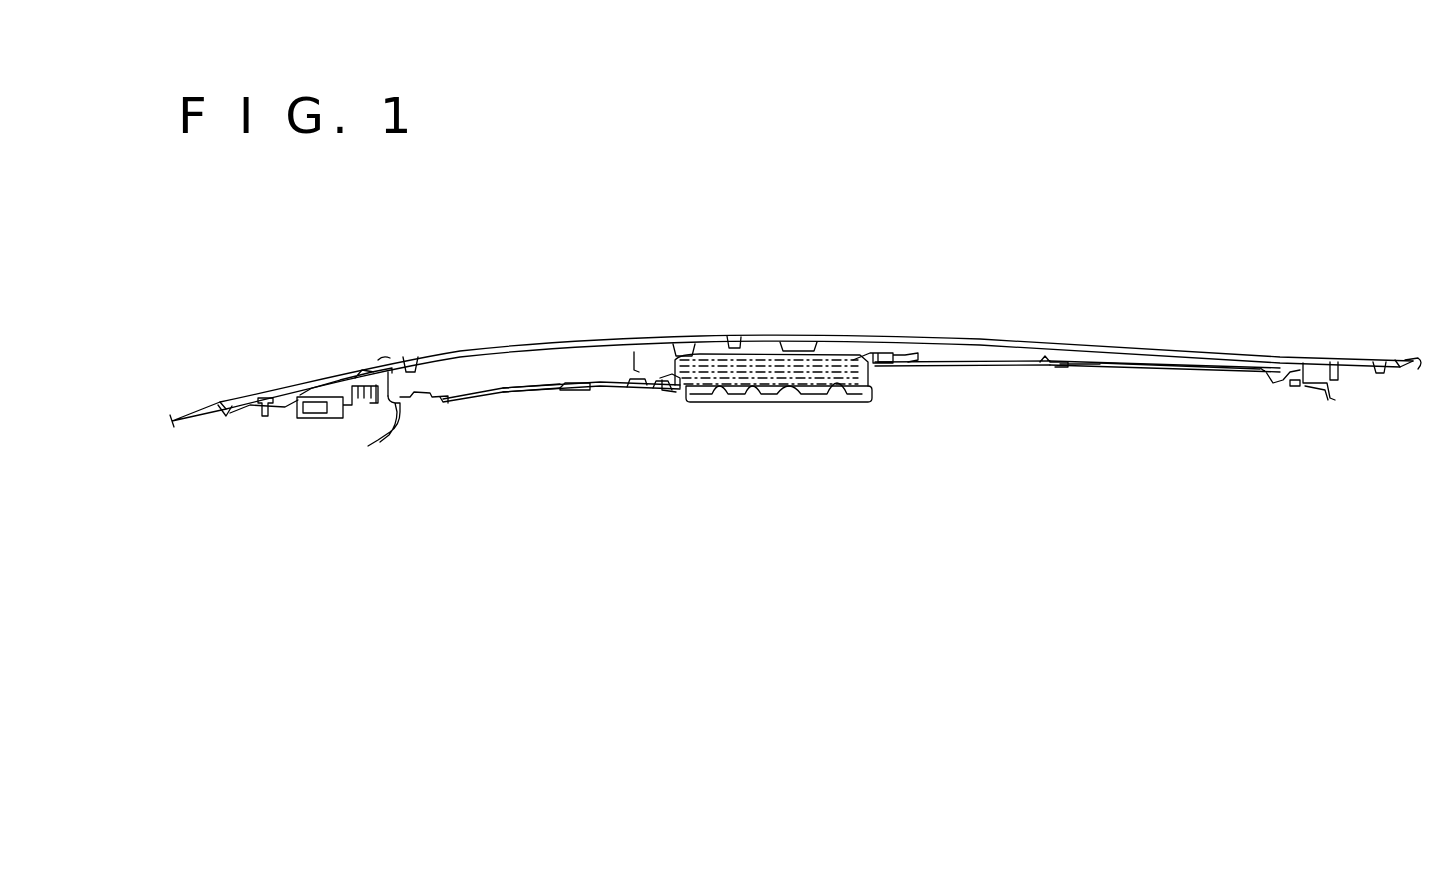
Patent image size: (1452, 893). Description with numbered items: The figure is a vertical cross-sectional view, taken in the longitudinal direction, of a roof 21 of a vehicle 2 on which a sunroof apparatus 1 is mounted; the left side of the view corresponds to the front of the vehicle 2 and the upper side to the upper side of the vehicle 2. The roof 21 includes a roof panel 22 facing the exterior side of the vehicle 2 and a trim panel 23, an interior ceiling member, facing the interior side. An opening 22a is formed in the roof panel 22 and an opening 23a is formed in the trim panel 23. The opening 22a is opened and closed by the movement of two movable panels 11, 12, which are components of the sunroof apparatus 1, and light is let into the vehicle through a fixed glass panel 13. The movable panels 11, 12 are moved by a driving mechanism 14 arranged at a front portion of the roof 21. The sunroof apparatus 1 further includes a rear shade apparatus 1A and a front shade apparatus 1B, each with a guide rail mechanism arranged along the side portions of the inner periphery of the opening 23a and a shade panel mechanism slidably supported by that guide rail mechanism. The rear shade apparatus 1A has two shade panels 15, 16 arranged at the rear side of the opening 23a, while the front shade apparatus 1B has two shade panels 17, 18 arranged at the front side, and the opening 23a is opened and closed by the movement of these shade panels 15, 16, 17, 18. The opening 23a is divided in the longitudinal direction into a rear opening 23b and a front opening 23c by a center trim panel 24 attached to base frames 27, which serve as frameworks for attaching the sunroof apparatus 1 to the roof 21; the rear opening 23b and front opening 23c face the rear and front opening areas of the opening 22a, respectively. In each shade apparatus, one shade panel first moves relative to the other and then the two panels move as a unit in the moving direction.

The sunroof apparatus 1 is at (1090, 295).
The rear shade apparatus 1A is at (1192, 351).
The front shade apparatus 1B is at (525, 360).
The vehicle 2 is at (214, 348).
The movable panel 11 is at (313, 370).
The movable panel 12 is at (600, 340).
The fixed glass panel 13 is at (967, 339).
The driving mechanism 14 is at (330, 420).
The shade panel 15 is at (1147, 370).
The shade panel 16 is at (975, 370).
The shade panel 17 is at (505, 400).
The shade panel 18 is at (598, 390).
The roof 21 is at (1395, 362).
The roof panel 22 is at (190, 412).
The opening 22a is at (222, 398).
The trim panel 23 is at (405, 420).
The opening 23a is at (1278, 385).
The rear opening 23b is at (878, 395).
The front opening 23c is at (680, 400).
The center trim panel 24 is at (768, 405).
The base frame 27 is at (287, 420).